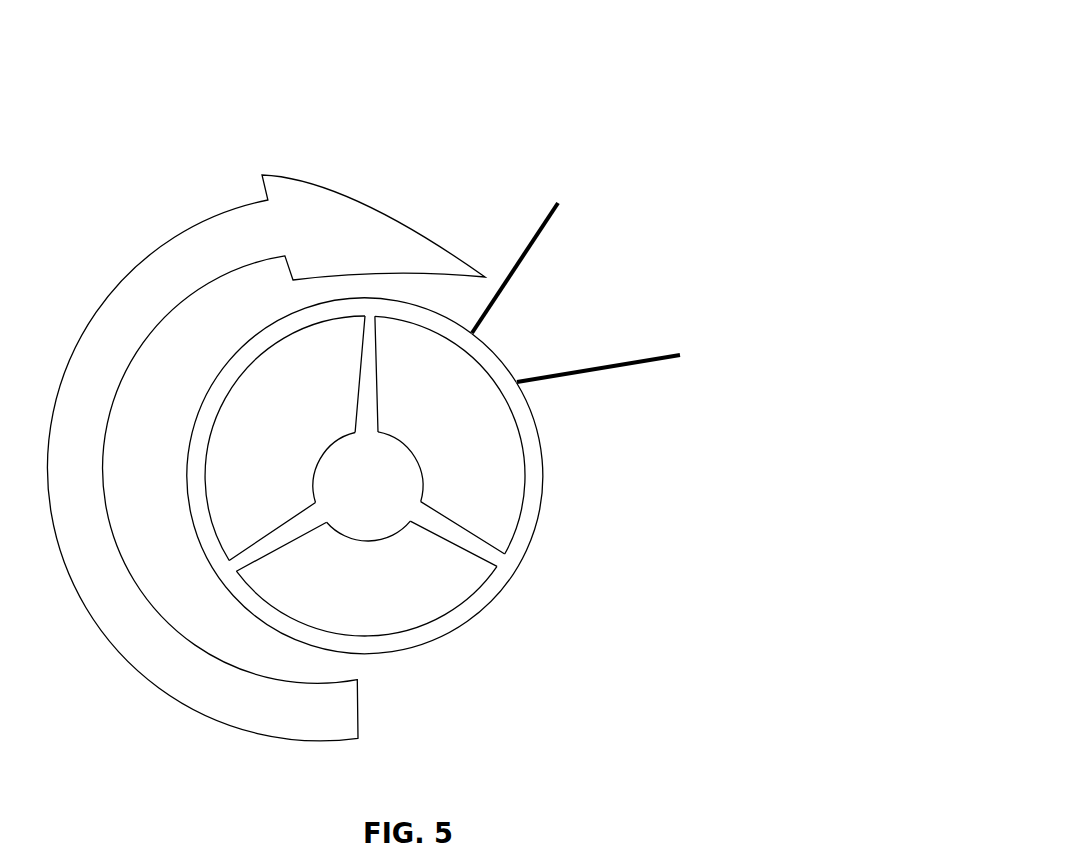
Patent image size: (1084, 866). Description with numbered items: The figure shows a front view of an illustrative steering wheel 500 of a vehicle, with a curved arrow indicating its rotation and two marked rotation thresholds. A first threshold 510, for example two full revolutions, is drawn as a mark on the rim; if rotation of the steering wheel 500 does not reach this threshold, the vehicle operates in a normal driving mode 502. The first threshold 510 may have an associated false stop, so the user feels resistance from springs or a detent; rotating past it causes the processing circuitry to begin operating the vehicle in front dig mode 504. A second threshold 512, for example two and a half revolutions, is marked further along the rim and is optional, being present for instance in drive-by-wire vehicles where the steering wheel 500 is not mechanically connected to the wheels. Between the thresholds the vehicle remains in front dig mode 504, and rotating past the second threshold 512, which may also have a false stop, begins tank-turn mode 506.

The steering wheel 500 is at (396, 39).
The normal driving mode 502 is at (370, 312).
The front dig mode 504 is at (490, 353).
The tank-turn mode 506 is at (542, 485).
The first threshold 510 is at (547, 223).
The second threshold 512 is at (597, 370).